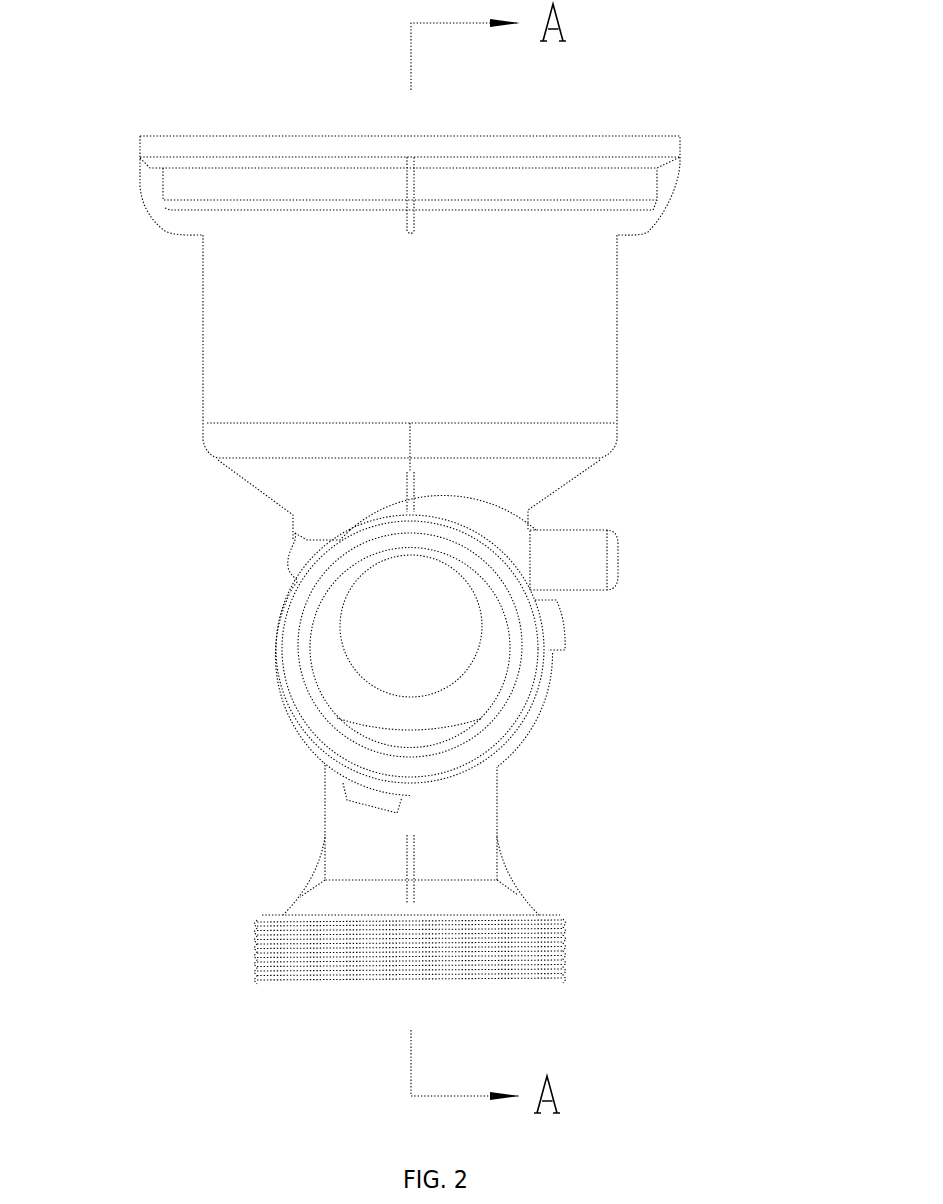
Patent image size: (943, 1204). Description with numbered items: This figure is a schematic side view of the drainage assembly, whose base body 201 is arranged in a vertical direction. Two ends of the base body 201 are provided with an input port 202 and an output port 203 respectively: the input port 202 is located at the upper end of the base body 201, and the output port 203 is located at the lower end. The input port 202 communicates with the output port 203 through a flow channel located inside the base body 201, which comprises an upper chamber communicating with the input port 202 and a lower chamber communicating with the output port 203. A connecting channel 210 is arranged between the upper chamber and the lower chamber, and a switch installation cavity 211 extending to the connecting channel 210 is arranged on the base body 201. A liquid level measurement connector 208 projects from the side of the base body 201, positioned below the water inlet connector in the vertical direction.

The base body 201 is at (529, 377).
The input port 202 is at (246, 134).
The output port 203 is at (331, 984).
The liquid level measurement connector 208 is at (597, 552).
The connecting channel 210 is at (390, 627).
The switch installation cavity 211 is at (494, 704).